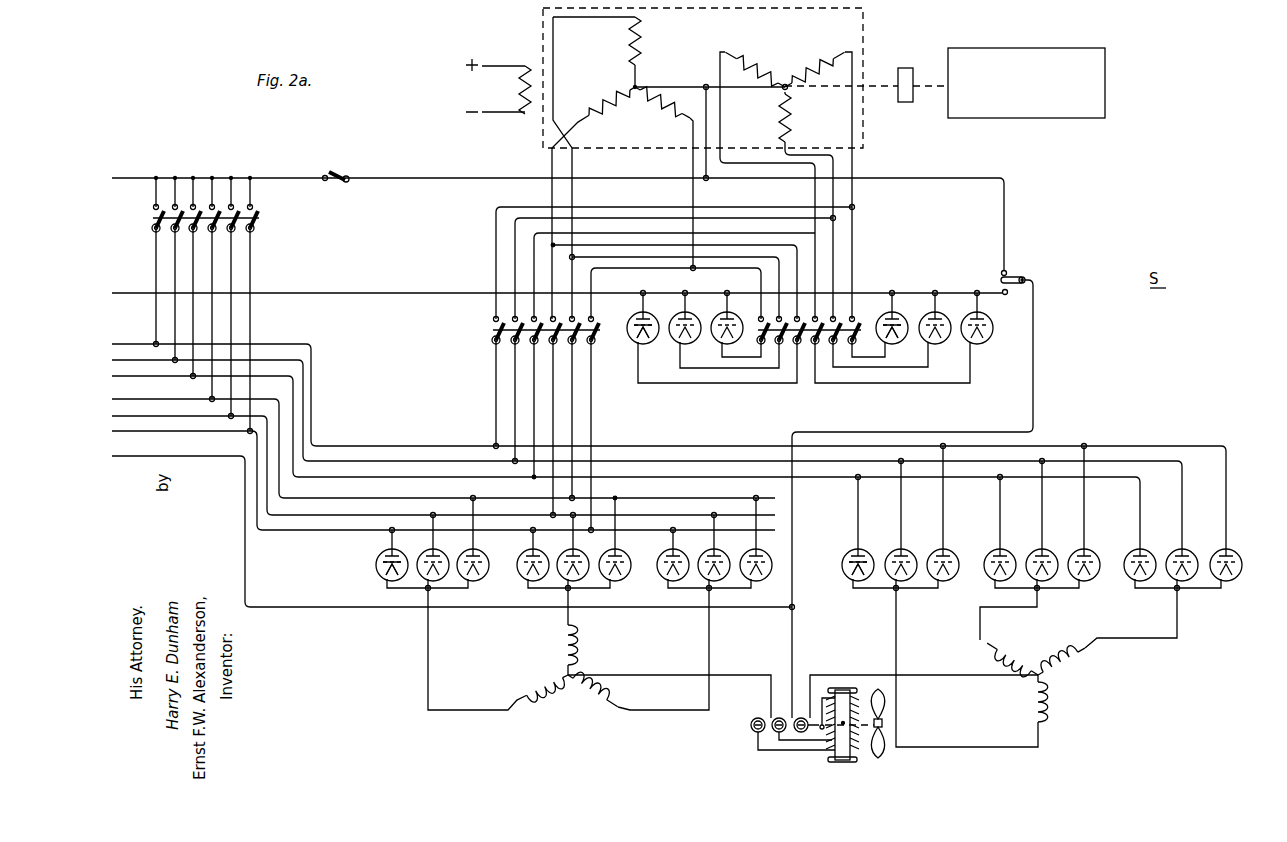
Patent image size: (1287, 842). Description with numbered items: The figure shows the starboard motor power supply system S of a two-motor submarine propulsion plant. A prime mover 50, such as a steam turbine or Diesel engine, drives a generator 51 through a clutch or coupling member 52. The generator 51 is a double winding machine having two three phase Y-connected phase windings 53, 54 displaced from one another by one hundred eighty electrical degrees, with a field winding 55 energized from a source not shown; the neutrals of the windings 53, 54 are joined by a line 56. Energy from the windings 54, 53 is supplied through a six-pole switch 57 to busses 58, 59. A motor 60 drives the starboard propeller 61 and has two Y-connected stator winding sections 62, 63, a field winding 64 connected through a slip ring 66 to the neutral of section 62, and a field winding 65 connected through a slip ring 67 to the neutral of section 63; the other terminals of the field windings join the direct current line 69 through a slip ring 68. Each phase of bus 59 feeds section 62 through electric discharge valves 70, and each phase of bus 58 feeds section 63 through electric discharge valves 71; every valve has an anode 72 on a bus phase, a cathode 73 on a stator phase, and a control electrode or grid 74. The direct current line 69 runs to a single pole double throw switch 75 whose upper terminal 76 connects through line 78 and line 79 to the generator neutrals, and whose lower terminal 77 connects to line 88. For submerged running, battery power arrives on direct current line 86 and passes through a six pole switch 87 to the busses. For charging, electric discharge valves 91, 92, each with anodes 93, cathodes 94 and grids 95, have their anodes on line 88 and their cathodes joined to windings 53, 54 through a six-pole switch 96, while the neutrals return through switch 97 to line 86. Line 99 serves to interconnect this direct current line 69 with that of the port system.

The prime mover 50 is at (1026, 83).
The generator 51 is at (716, 36).
The clutch or coupling member 52 is at (905, 68).
The phase winding 53 is at (630, 86).
The phase winding 54 is at (790, 84).
The field winding 55 is at (518, 88).
The line 56 is at (686, 86).
The six-pole switch 57 is at (490, 331).
The bus 58 is at (136, 376).
The bus 59 is at (136, 431).
The motor 60 is at (842, 650).
The starboard propeller 61 is at (878, 708).
The stator winding section 62 is at (572, 675).
The stator winding section 63 is at (1040, 668).
The field winding 64 is at (852, 758).
The field winding 65 is at (850, 708).
The slip ring 66 is at (759, 717).
The slip ring 67 is at (802, 717).
The slip ring 68 is at (780, 717).
The direct current line 69 is at (790, 634).
The electric discharge valve 70 is at (420, 556).
The electric discharge valve 71 is at (888, 556).
The anode 72 is at (388, 554).
The cathode 73 is at (386, 576).
The control electrode or grid 74 is at (379, 566).
The single pole double throw switch 75 is at (1026, 277).
The terminal 76 is at (1000, 268).
The terminal 77 is at (1006, 295).
The line 78 is at (490, 177).
The line 79 is at (708, 140).
The direct current line 86 is at (130, 178).
The six pole switch 87 is at (150, 220).
The line 88 is at (130, 293).
The electric discharge valve 91 is at (676, 318).
The electric discharge valve 92 is at (928, 316).
The anode 93 is at (635, 320).
The cathode 94 is at (640, 343).
The control electrode or grid 95 is at (633, 334).
The six-pole switch 96 is at (742, 317).
The switch 97 is at (337, 171).
The line 99 is at (130, 456).